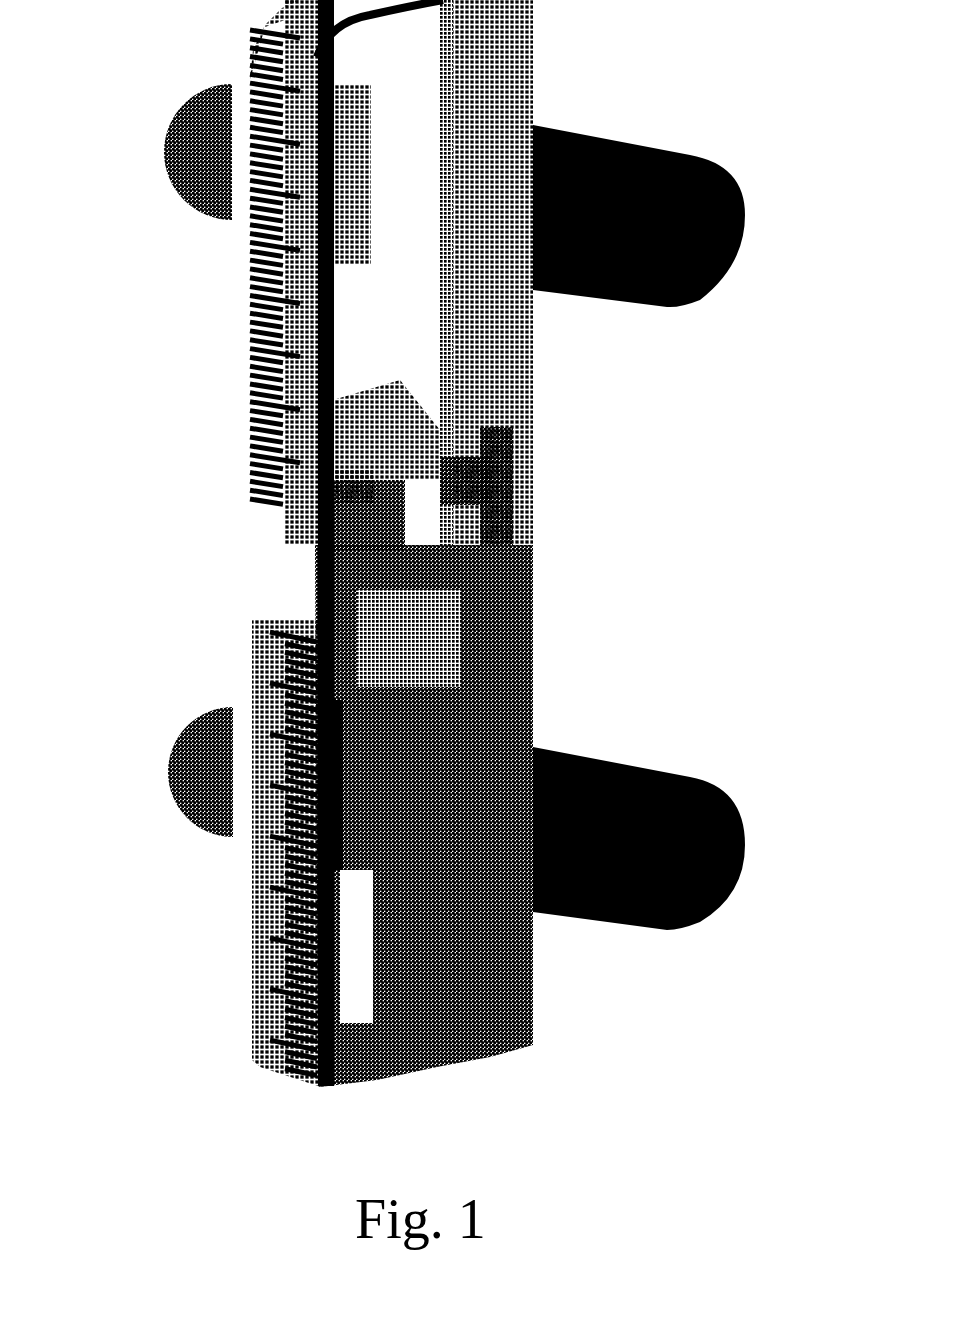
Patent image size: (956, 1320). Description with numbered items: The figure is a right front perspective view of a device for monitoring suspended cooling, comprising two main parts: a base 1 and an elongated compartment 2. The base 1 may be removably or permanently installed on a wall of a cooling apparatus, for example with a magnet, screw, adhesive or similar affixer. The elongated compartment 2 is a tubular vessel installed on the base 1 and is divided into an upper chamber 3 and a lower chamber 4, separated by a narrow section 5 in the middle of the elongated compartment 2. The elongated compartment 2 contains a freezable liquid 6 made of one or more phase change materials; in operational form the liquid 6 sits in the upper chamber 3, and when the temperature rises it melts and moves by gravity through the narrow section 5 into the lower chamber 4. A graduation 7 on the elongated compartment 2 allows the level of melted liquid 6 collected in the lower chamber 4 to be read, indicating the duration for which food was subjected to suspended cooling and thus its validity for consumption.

The base 1 is at (643, 193).
The elongated compartment 2 is at (523, 452).
The upper chamber 3 is at (500, 73).
The lower chamber 4 is at (523, 717).
The narrow section 5 is at (400, 524).
The freezable liquid 6 is at (442, 948).
The graduation 7 is at (270, 230).